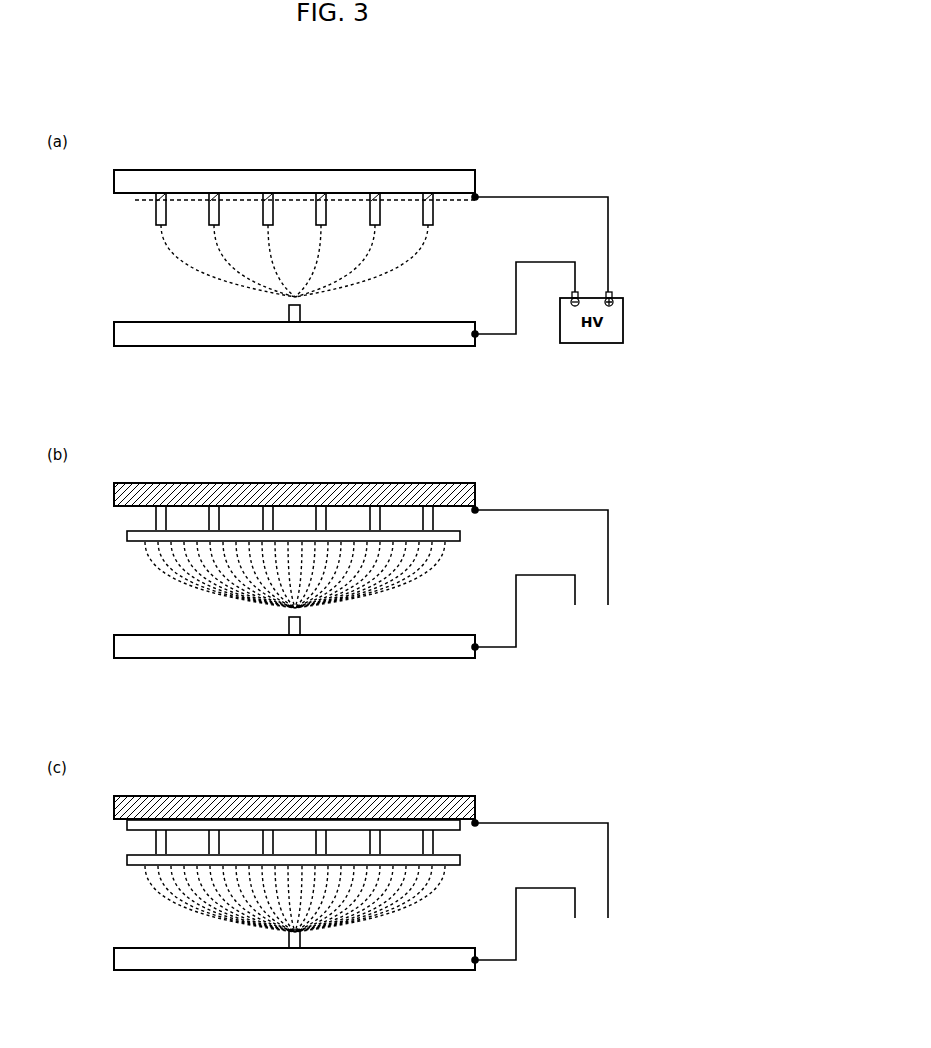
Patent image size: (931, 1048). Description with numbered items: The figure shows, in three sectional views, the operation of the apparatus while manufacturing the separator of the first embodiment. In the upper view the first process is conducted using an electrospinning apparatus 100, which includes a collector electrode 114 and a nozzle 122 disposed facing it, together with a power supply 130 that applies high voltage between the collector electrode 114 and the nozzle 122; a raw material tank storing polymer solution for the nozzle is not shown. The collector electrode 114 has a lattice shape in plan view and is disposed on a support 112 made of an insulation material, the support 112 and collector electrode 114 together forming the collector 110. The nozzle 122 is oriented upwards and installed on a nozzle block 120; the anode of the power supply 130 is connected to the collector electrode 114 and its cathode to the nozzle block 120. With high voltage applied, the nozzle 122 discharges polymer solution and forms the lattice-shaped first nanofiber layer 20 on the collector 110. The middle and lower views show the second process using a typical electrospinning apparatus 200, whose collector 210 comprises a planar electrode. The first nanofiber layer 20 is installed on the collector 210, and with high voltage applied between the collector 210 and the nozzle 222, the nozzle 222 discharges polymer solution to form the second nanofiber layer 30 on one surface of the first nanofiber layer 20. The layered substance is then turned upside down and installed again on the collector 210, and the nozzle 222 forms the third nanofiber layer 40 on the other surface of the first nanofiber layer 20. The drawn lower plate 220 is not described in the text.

The electrospinning apparatus 100 is at (581, 149).
The collector 110 is at (316, 163).
The support 112 is at (114, 178).
The collector electrode 114 is at (158, 200).
The first nanofiber layer 20 is at (448, 220).
The nozzle 122 is at (301, 314).
The nozzle block 120 is at (299, 356).
The power supply 130 is at (595, 344).
The electrospinning apparatus 200 is at (581, 462).
The collector 210 is at (316, 476).
The second nanofiber layer 30 is at (127, 536).
The third nanofiber layer 40 is at (127, 860).
The nozzle 222 is at (301, 627).
The collector plate 220 is at (299, 669).